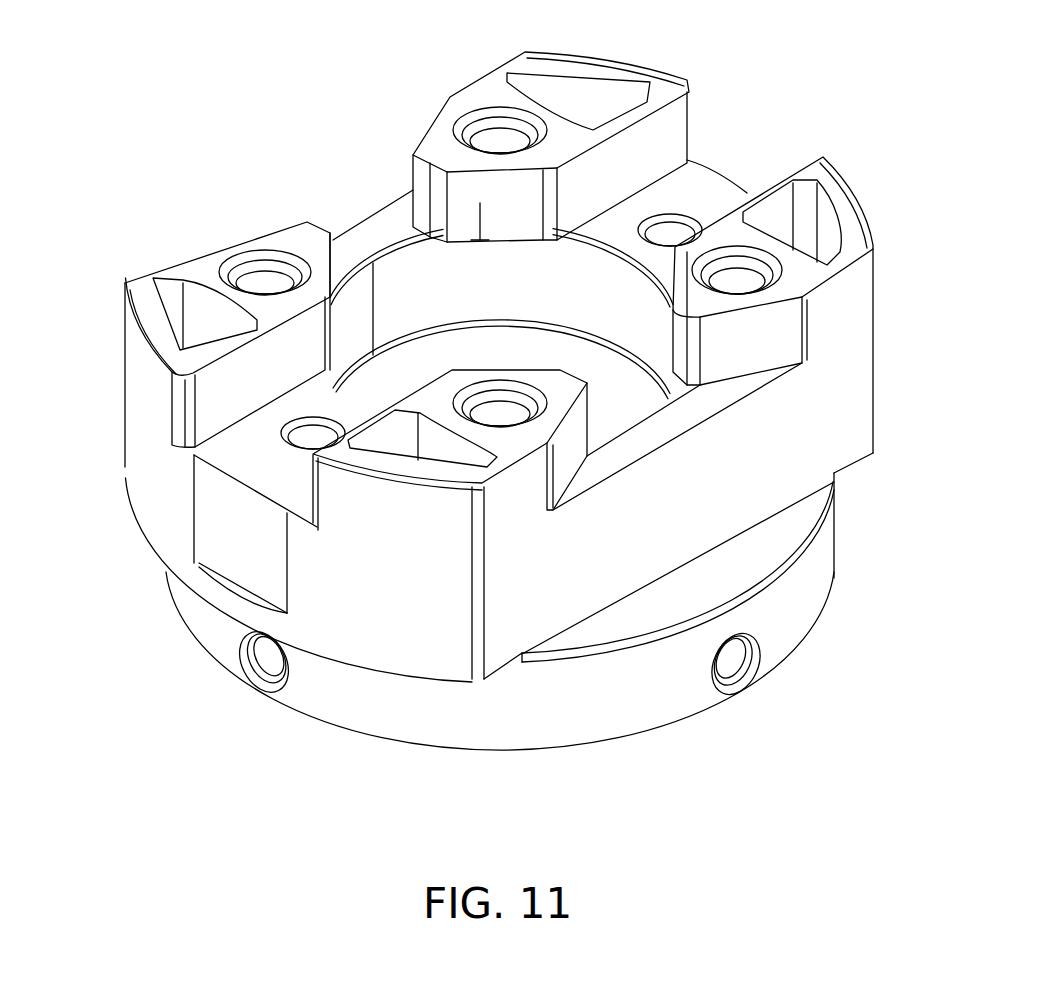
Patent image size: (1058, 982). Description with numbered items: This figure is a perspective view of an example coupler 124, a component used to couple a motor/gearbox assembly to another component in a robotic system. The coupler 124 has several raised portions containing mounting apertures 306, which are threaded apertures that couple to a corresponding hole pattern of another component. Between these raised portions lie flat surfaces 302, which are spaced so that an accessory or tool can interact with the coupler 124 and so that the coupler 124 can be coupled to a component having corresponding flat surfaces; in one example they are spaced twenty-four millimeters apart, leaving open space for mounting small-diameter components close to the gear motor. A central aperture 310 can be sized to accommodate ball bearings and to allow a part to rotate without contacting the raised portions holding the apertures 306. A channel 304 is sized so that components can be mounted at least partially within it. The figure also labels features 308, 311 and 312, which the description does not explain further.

The coupler 124 is at (148, 64).
The flat surfaces 302 is at (347, 178).
The channel 304 is at (793, 130).
The mounting apertures 306 is at (503, 112).
The locating hole 308 is at (320, 418).
The aperture 310 is at (533, 319).
The boss height 311 is at (480, 203).
The side threaded hole 312 is at (245, 660).